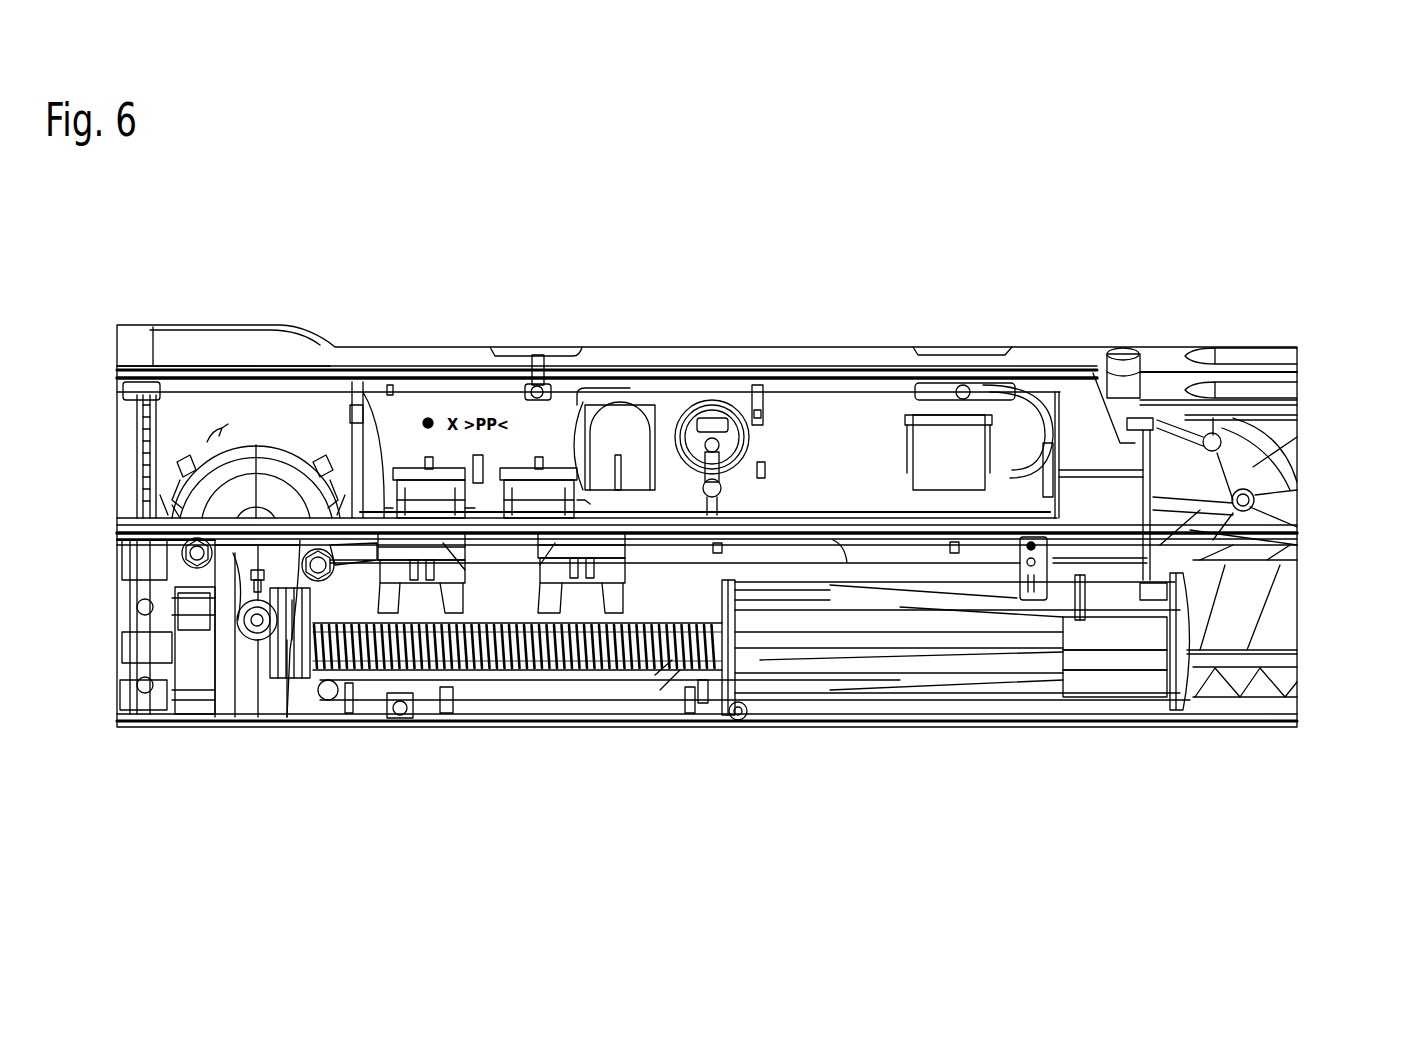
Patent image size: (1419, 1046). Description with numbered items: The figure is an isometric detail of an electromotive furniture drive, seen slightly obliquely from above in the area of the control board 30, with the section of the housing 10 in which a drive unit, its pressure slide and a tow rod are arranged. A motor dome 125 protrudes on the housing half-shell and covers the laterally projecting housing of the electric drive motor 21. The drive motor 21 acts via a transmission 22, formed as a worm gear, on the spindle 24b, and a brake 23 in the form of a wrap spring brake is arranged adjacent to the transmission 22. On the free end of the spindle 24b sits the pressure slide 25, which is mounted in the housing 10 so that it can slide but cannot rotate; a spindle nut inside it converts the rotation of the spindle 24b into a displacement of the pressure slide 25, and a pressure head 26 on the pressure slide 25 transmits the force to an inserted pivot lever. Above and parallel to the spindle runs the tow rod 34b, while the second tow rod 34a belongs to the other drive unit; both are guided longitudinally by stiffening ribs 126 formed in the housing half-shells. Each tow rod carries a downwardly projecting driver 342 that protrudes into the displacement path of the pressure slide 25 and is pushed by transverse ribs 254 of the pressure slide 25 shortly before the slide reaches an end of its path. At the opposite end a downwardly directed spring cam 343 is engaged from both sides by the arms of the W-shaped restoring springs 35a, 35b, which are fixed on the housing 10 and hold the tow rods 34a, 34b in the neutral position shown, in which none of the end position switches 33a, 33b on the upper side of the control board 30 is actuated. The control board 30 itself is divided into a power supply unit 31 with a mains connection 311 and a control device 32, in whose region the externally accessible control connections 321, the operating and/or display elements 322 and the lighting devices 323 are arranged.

The housing 10 is at (1165, 248).
The motor dome 125 is at (175, 327).
The electric drive motor 21 is at (237, 400).
The end position switch 33a is at (436, 473).
The end position switch 33b is at (543, 507).
The control connection 321 is at (633, 427).
The operating and/or display element 322 is at (713, 420).
The lighting device 323 is at (721, 490).
The control board 30 is at (820, 505).
The power supply unit 31 is at (901, 518).
The control device 32 is at (693, 518).
The mains connection 311 is at (937, 447).
The stiffening rib 126 is at (1290, 515).
The tow rod 34a is at (160, 532).
The tow rod 34b is at (803, 533).
The transmission 22 is at (238, 678).
The brake 23 is at (287, 717).
The spindle 24b is at (357, 672).
The restoring spring 35a is at (450, 608).
The restoring spring 35b is at (612, 608).
The spring cam 343 is at (555, 543).
The transverse rib 254 is at (713, 660).
The pressure slide 25 is at (893, 655).
The driver 342 is at (1012, 600).
The pressure head 26 is at (1185, 600).